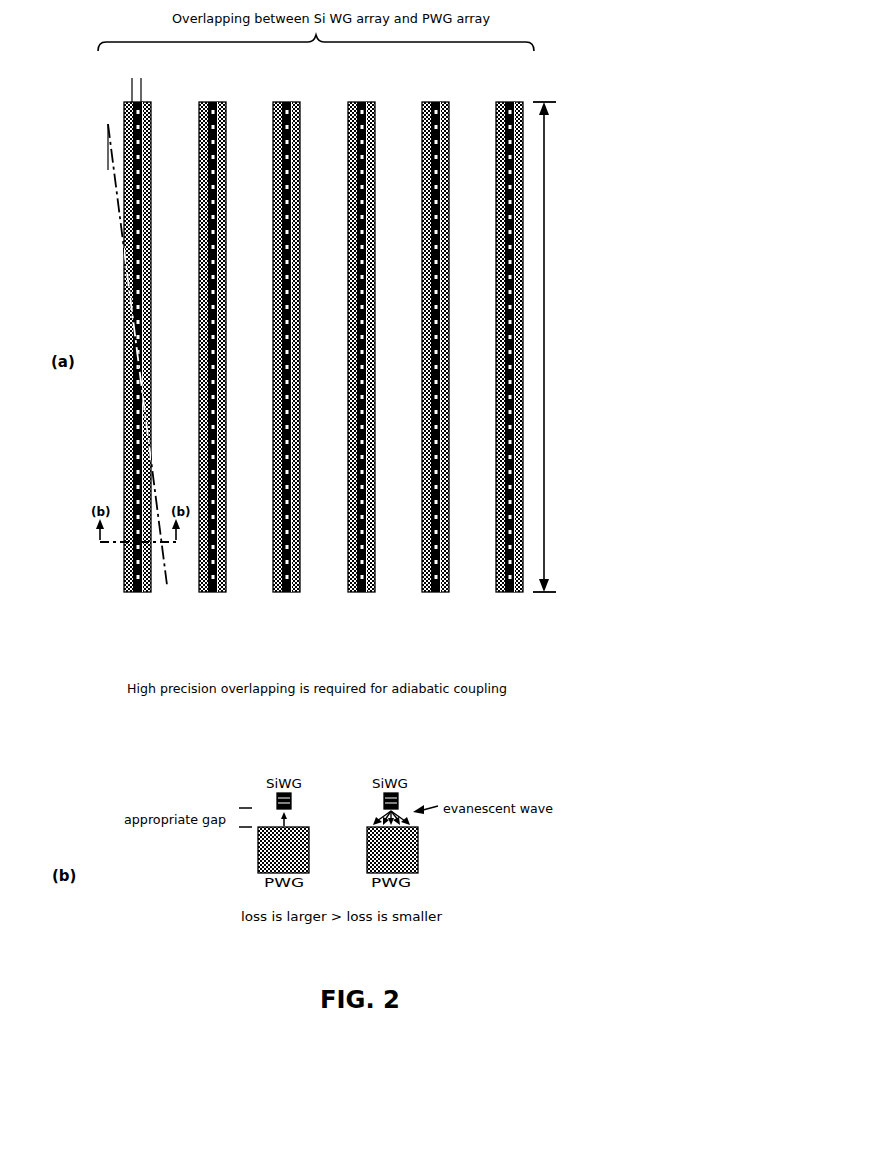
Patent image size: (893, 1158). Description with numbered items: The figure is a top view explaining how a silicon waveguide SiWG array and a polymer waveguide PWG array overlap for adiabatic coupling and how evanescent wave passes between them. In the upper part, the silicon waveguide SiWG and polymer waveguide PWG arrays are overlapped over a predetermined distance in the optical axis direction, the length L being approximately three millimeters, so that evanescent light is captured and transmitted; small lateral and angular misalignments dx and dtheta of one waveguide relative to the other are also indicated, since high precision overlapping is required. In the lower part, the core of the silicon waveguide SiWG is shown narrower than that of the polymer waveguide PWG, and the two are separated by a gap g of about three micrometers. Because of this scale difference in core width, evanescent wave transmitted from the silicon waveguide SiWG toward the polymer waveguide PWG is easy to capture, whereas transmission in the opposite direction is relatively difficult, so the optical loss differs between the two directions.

The silicon waveguide SiWG is at (135, 594).
The polymer waveguide PWG is at (143, 593).
The length L is at (551, 347).
The gap g is at (245, 790).
The lateral offset δx dx is at (160, 85).
The angular misalignment δθ dtheta is at (92, 135).